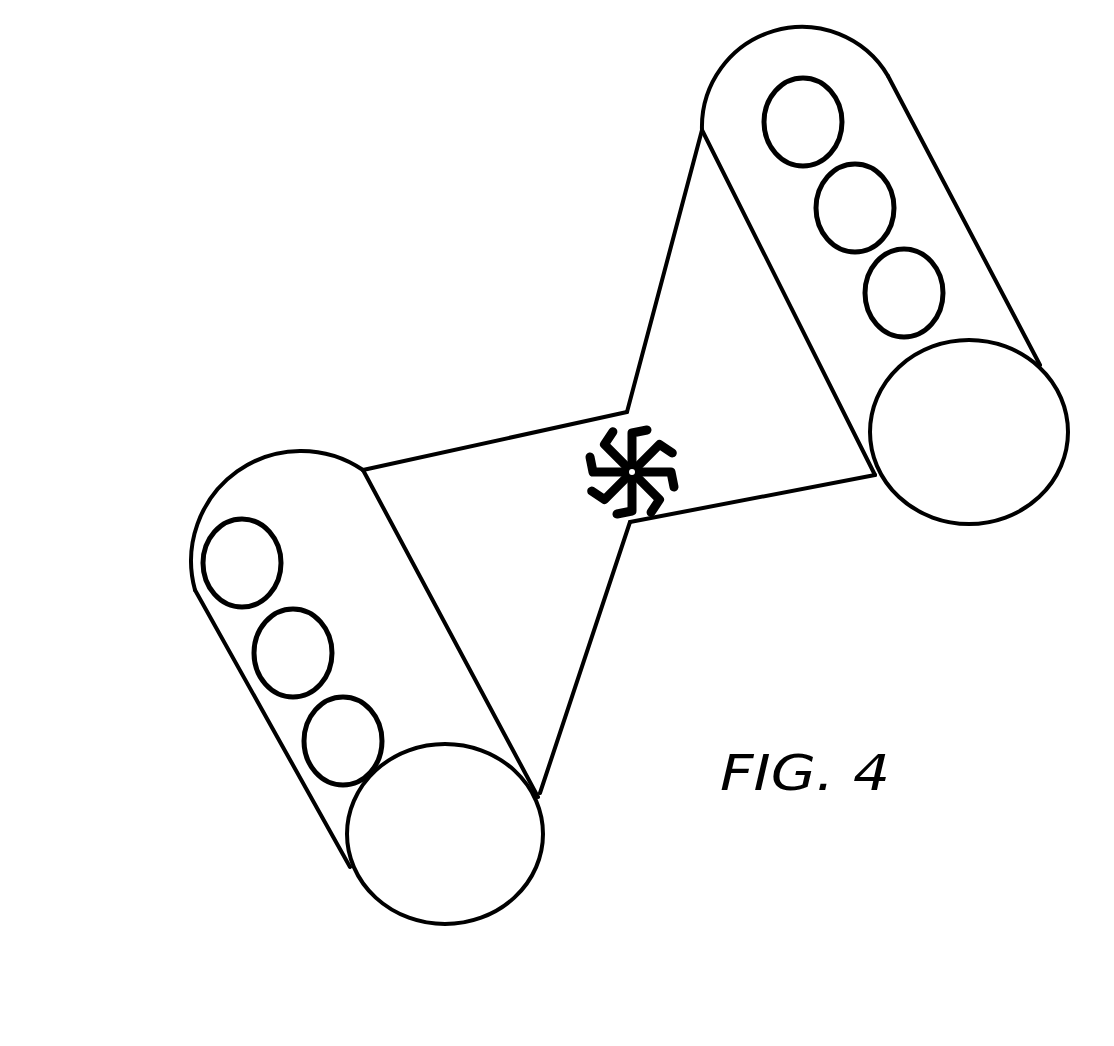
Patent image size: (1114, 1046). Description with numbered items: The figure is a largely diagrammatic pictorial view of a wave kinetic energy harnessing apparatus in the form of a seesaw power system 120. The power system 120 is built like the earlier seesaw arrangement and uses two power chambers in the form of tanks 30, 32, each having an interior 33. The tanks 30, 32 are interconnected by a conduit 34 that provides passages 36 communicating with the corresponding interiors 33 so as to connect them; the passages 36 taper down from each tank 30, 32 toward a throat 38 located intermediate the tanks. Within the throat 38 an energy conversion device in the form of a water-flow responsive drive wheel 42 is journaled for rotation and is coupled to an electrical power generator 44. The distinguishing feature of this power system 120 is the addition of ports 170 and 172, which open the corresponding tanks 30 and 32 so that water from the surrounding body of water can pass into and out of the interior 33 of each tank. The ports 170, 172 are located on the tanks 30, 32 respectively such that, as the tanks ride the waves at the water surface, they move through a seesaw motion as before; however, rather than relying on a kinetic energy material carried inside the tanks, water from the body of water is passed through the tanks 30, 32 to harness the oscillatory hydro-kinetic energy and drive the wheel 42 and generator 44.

The tank 30 is at (895, 120).
The tank 32 is at (227, 482).
The interior 33 is at (922, 303).
The conduit 34 is at (515, 430).
The passages 36 is at (777, 477).
The throat 38 is at (620, 425).
The drive wheel 42 is at (683, 440).
The electrical power generator 44 is at (637, 493).
The power system 120 is at (619, 461).
The ports 170 is at (763, 128).
The ports 172 is at (253, 650).